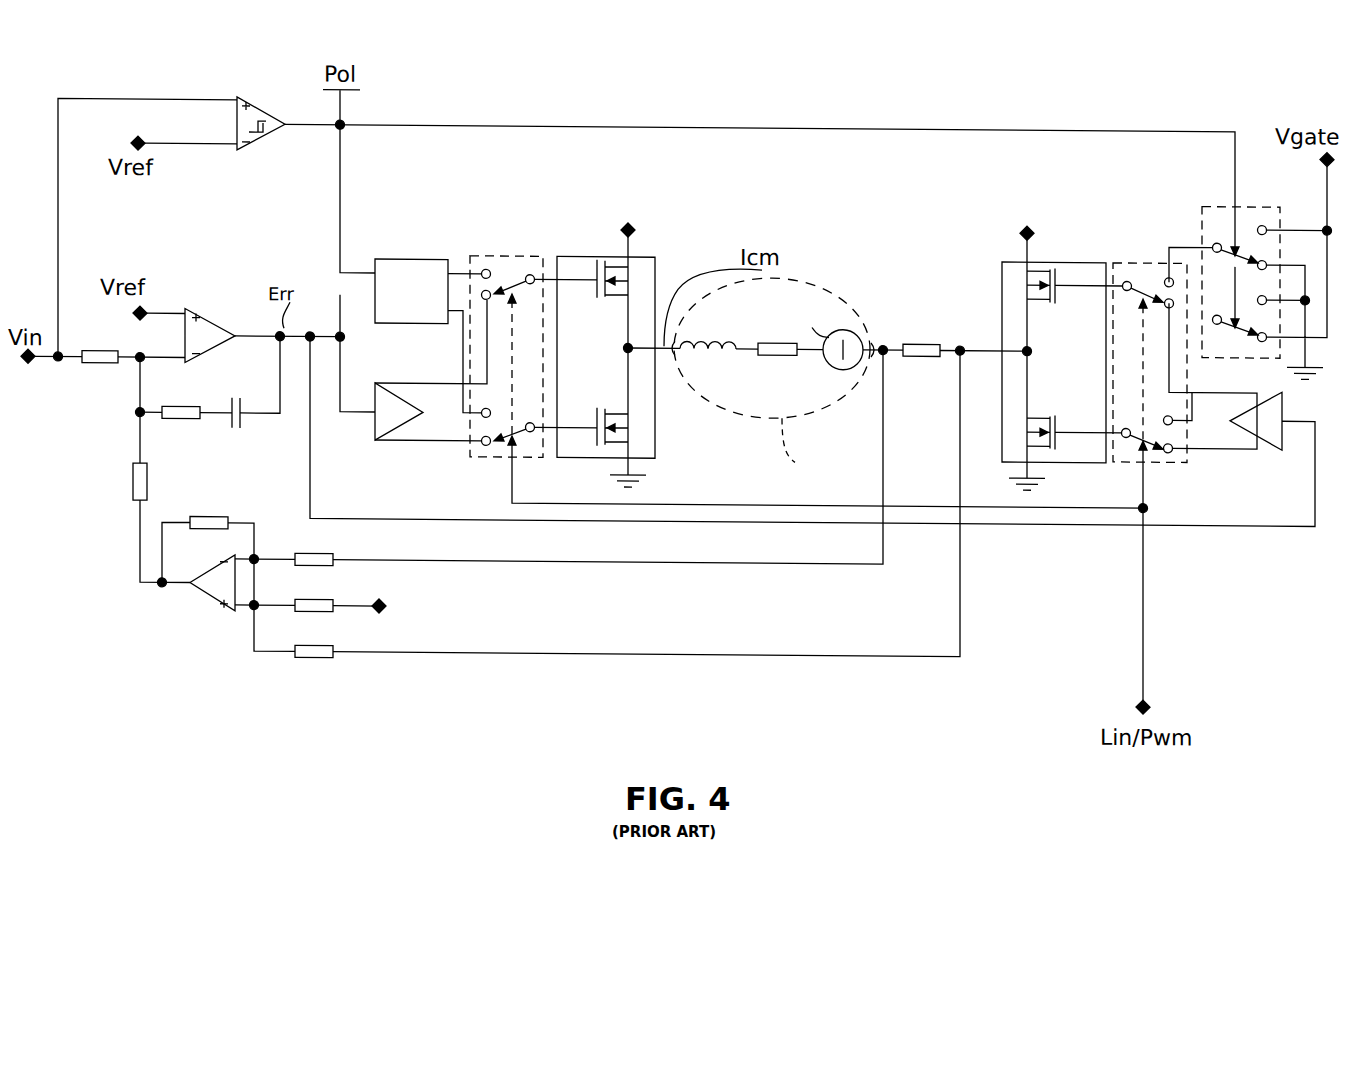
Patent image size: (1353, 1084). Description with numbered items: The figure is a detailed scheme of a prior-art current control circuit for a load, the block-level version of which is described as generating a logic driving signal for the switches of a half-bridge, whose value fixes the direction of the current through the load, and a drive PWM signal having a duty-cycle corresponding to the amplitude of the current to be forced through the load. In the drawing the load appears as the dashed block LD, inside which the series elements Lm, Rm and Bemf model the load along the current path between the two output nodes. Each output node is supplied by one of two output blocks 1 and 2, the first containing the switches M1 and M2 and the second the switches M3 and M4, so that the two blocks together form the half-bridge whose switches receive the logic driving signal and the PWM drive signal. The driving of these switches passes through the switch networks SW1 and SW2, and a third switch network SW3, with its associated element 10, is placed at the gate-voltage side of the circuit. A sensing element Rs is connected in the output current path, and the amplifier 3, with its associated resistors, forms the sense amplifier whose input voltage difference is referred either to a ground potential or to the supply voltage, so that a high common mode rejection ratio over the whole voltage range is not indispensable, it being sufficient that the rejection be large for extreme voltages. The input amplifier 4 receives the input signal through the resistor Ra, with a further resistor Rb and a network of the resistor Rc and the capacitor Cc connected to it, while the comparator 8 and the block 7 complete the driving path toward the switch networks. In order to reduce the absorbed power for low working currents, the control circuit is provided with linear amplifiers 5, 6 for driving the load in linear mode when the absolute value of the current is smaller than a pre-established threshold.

The first output stage (half bridge with M1, M2) 1 is at (628, 347).
The second output stage (half bridge with M3, M4) 2 is at (1012, 355).
The sense amplifier 3 is at (207, 583).
The error amplifier 4 is at (212, 326).
The linear amplifier 5 is at (377, 428).
The linear amplifier 6 is at (1268, 445).
The PWM control block 7 is at (425, 302).
The polarity comparator with hysteresis 8 is at (258, 136).
The gate switch SW3 control 10 is at (1215, 257).
The high-side transistor of first stage M1 is at (637, 262).
The low-side transistor of first stage M2 is at (637, 421).
The high-side transistor of second stage M3 is at (1018, 262).
The low-side transistor of second stage M4 is at (1016, 426).
The first mode switch SW1 is at (506, 343).
The second mode switch SW2 is at (1146, 347).
The gate voltage switch SW3 is at (1200, 226).
The motor load model LD is at (772, 376).
The motor inductance Lm is at (708, 365).
The motor resistance Rm is at (777, 366).
The back-EMF source Bemf is at (818, 337).
The sense resistor Rs is at (921, 366).
The input resistor Ra is at (99, 372).
The feedback resistor Rb is at (119, 481).
The compensation resistor Rc is at (181, 428).
The compensation capacitor Cc is at (257, 425).